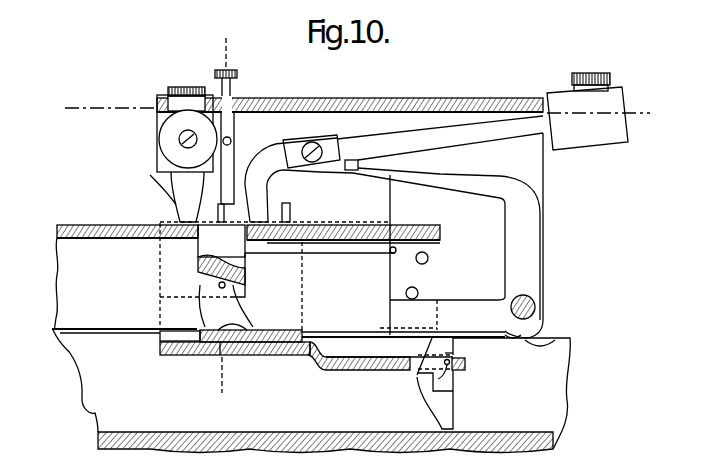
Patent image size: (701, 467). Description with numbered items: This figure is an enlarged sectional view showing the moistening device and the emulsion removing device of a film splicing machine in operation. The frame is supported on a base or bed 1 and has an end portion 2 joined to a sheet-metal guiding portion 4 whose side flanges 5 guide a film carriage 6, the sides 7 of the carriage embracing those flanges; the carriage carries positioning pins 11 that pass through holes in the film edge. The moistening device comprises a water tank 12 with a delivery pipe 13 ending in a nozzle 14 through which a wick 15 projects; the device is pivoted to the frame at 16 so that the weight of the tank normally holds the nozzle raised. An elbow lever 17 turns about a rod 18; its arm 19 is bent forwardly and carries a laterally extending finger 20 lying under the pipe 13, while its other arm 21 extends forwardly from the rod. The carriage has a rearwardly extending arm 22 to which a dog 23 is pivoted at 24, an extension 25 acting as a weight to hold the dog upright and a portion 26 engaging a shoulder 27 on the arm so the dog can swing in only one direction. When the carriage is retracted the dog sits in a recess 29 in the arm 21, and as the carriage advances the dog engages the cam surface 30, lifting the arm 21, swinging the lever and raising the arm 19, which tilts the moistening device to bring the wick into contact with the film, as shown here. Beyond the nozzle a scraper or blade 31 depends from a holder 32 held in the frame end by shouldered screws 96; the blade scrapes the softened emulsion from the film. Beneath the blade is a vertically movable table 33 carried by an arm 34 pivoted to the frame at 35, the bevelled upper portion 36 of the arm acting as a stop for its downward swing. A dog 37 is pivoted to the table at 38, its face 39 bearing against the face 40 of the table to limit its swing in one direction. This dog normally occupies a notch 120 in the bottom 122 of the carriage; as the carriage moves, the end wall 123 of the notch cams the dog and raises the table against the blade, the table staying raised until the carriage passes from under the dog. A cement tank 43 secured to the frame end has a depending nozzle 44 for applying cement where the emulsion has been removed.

The base or bed 1 is at (553, 438).
The end portion 2 is at (483, 99).
The guiding portion 4 is at (70, 225).
The side flanges 5 is at (57, 275).
The film carriage 6 is at (283, 343).
The sides 7 is at (160, 273).
The positioning pins 11 is at (315, 210).
The tank 12 is at (637, 155).
The delivery pipe 13 is at (418, 133).
The nozzle 14 is at (272, 195).
The wick 15 is at (265, 227).
The pivot 16 is at (312, 140).
The elbow lever 17 is at (537, 260).
The rod 18 is at (530, 306).
The arm 19 is at (472, 187).
The finger 20 is at (350, 171).
The arm 21 is at (452, 308).
The arm 22 is at (368, 373).
The dog 23 is at (422, 377).
The pivot 24 is at (449, 377).
The extension 25 is at (455, 410).
The portion 26 is at (455, 352).
The shoulder 27 is at (466, 367).
The recess 29 is at (553, 342).
The cam surface 30 is at (507, 333).
The scraper or blade 31 is at (224, 210).
The holder 32 is at (229, 157).
The table 33 is at (210, 243).
The arm 34 is at (330, 247).
The pivot 35 is at (391, 252).
The bevelled upper portion 36 is at (417, 261).
The dog 37 is at (228, 313).
The pivot 38 is at (222, 287).
The face 39 is at (207, 277).
The face 40 is at (200, 265).
The tank 43 is at (170, 128).
The depending nozzle 44 is at (182, 182).
The shouldered screws 96 is at (237, 72).
The notch 120 is at (170, 334).
The bottom 122 is at (220, 360).
The end wall 123 is at (202, 348).